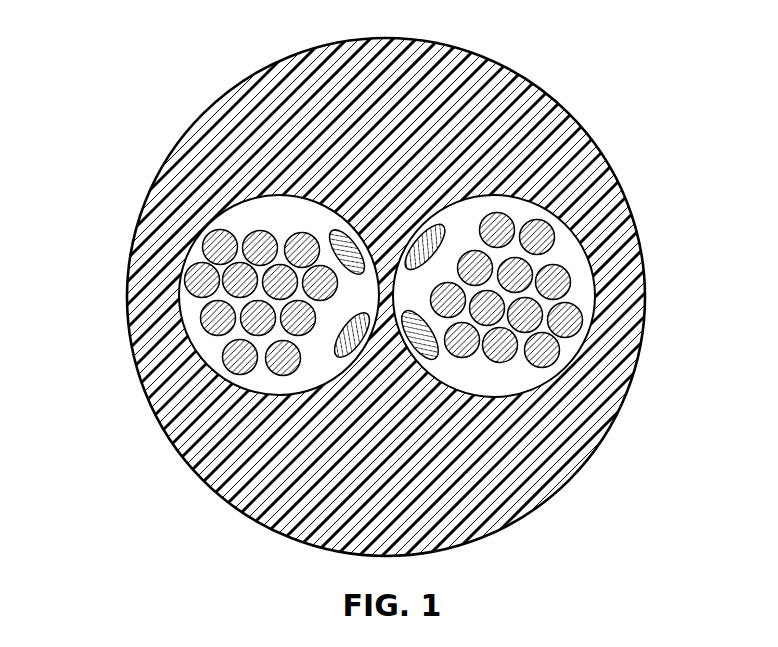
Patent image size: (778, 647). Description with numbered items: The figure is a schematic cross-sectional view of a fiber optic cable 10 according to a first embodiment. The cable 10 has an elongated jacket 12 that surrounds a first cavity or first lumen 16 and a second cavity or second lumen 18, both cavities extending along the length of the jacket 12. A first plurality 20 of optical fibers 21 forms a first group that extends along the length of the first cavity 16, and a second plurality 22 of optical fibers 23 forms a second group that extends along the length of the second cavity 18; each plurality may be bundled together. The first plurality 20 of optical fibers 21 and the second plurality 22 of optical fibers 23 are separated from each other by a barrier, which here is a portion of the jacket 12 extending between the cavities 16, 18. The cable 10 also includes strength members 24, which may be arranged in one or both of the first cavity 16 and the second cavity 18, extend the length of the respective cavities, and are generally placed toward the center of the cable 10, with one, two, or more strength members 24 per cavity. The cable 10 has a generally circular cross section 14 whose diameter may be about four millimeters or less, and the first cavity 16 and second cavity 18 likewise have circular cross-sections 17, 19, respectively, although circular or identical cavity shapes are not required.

The fiber optic cable 10 is at (568, 92).
The jacket 12 is at (196, 432).
The cross section 14 is at (214, 500).
The first cavity 16 is at (556, 246).
The circular cross-section of first cavity 17 is at (593, 277).
The second cavity 18 is at (213, 348).
The circular cross-section of second cavity 19 is at (183, 310).
The first plurality of optical fibers 20 is at (508, 374).
The optical fibers 21 is at (578, 320).
The second plurality of optical fibers 22 is at (270, 194).
The optical fibers 23 is at (188, 262).
The strength members 24 is at (278, 228).